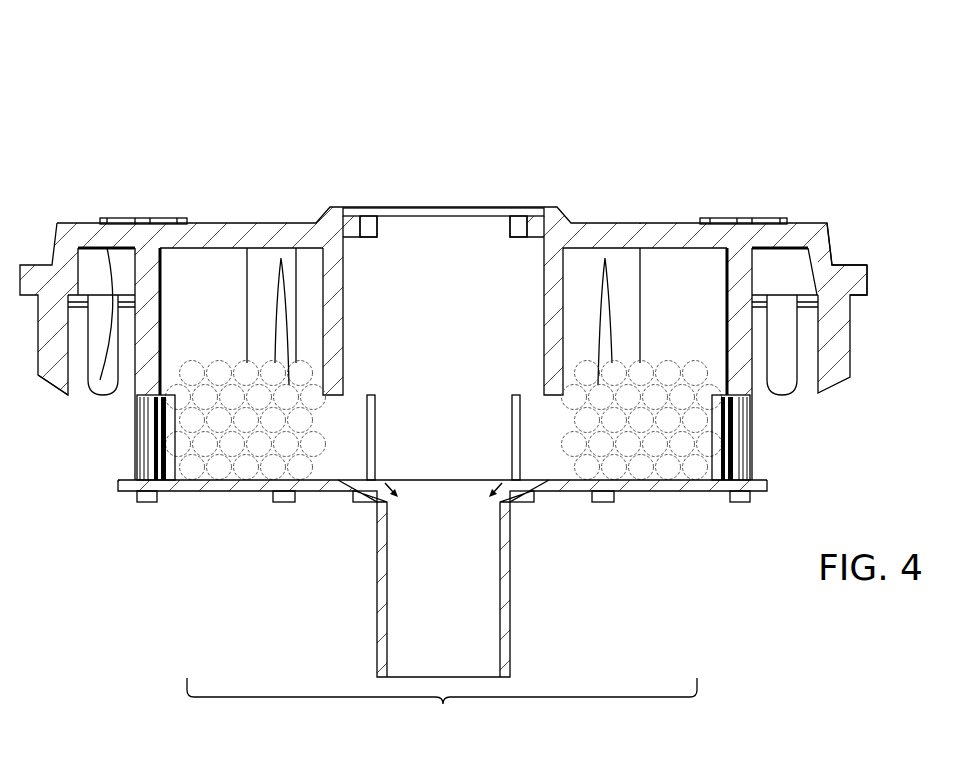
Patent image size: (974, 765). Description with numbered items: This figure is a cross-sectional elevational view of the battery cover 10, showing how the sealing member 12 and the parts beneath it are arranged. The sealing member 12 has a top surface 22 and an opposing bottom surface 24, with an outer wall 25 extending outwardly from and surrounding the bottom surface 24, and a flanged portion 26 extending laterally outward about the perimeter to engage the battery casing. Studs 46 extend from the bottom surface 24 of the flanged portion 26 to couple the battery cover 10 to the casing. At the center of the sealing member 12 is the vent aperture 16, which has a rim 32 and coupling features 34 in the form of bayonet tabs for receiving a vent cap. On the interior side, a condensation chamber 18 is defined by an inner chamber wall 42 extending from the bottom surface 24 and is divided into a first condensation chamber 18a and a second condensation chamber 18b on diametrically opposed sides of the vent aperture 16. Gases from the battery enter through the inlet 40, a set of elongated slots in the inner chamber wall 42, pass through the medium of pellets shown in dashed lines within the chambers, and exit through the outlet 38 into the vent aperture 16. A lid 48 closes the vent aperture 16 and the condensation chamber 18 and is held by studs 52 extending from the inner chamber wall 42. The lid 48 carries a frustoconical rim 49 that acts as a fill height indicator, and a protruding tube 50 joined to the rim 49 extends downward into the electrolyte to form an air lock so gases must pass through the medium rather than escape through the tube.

The battery cover 10 is at (779, 76).
The sealing member 12 is at (273, 212).
The vent aperture 16 is at (343, 290).
The condensation chamber 18 is at (442, 706).
The first condensation chamber 18a is at (723, 307).
The second condensation chamber 18b is at (163, 307).
The top surface 22 is at (640, 223).
The bottom surface 24 is at (100, 380).
The outer wall 25 is at (830, 246).
The flanged portion 26 is at (867, 280).
The rim 32 is at (550, 207).
The coupling feature 34 is at (512, 230).
The outlet 38 is at (367, 463).
The inlet 40 is at (139, 457).
The inner chamber wall 42 is at (142, 400).
The studs 46 is at (57, 377).
The lid 48 is at (262, 504).
The frustoconical rim 49 is at (510, 492).
The protruding tube 50 is at (512, 640).
The studs 52 is at (738, 503).